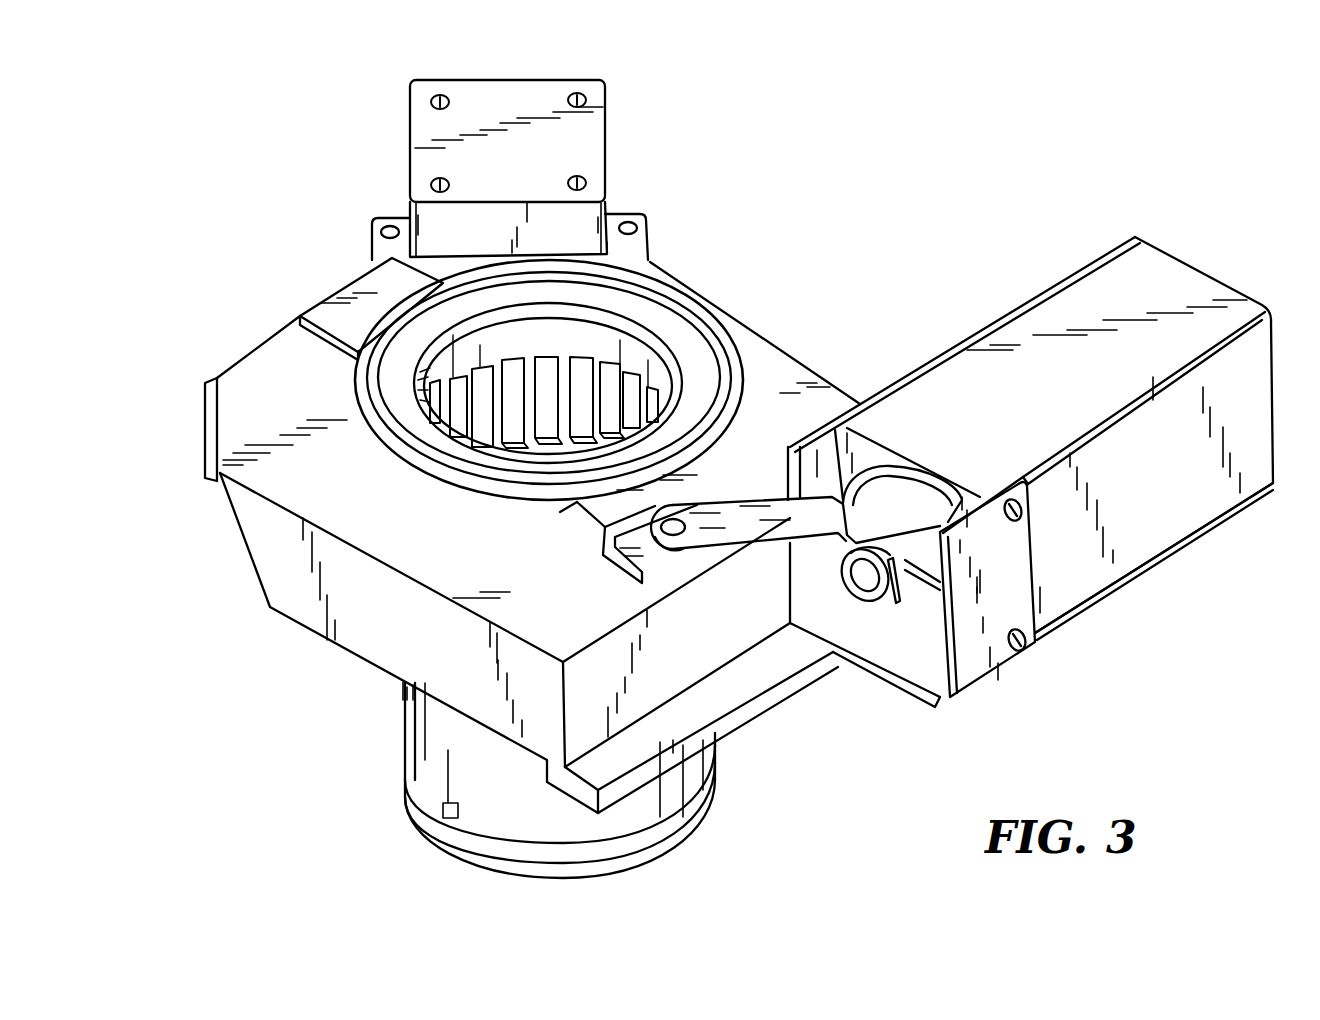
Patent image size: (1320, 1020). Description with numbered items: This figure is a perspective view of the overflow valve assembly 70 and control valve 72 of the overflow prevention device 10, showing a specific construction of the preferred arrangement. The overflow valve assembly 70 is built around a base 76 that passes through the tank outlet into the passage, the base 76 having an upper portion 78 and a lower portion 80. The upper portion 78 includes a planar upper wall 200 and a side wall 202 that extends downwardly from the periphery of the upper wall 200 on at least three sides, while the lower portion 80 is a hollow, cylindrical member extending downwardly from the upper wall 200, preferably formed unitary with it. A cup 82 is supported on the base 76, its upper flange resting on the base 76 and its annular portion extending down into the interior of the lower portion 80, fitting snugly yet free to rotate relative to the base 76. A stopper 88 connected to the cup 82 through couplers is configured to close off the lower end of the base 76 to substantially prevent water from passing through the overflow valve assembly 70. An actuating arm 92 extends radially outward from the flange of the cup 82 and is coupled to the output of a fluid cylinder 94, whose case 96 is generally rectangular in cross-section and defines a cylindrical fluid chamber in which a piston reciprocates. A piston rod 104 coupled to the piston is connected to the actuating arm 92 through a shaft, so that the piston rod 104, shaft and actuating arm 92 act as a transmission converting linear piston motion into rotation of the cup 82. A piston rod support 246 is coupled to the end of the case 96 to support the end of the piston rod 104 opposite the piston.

The overflow prevention device 10 is at (936, 166).
The overflow valve assembly 70 is at (819, 313).
The control valve 72 is at (613, 125).
The base 76 is at (237, 565).
The upper portion 78 is at (530, 535).
The lower portion 80 is at (402, 748).
The cup 82 is at (666, 326).
The stopper 88 is at (599, 852).
The actuating arm 92 is at (753, 520).
The fluid cylinder 94 is at (1072, 271).
The case 96 is at (1138, 566).
The piston rod 104 is at (913, 560).
The upper wall 200 is at (266, 365).
The side wall 202 is at (357, 627).
The piston rod support 246 is at (972, 686).